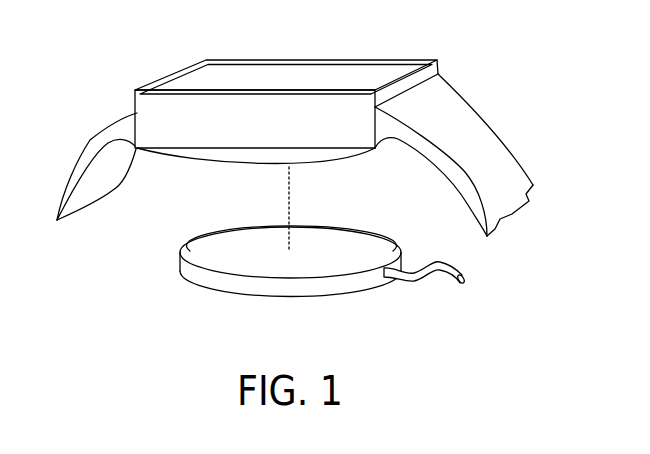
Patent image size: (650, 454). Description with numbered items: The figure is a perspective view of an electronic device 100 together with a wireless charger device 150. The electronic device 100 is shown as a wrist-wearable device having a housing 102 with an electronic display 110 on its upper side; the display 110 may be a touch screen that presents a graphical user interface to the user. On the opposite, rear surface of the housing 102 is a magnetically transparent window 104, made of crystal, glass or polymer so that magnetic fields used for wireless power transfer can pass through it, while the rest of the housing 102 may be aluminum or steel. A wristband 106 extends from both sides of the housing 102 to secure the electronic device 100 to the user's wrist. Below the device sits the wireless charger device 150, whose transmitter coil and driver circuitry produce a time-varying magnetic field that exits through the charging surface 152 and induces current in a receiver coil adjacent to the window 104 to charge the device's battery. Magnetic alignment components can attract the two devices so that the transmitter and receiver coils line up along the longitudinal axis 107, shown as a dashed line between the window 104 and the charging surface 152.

The electronic device 100 is at (305, 120).
The housing 102 is at (215, 134).
The magnetically transparent window 104 is at (198, 156).
The wristband 106 is at (87, 153).
The longitudinal axis 107 is at (290, 207).
The electronic display 110 is at (300, 78).
The wireless charger device 150 is at (270, 249).
The charging surface 152 is at (267, 250).